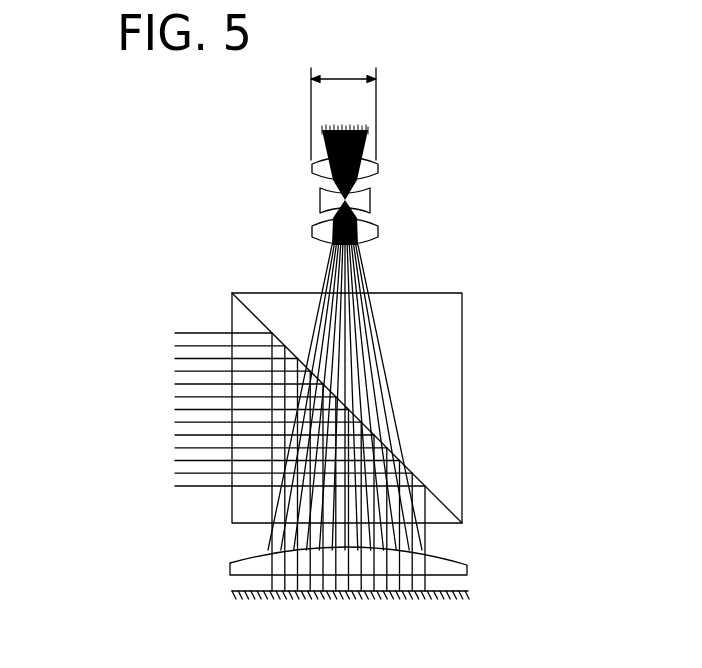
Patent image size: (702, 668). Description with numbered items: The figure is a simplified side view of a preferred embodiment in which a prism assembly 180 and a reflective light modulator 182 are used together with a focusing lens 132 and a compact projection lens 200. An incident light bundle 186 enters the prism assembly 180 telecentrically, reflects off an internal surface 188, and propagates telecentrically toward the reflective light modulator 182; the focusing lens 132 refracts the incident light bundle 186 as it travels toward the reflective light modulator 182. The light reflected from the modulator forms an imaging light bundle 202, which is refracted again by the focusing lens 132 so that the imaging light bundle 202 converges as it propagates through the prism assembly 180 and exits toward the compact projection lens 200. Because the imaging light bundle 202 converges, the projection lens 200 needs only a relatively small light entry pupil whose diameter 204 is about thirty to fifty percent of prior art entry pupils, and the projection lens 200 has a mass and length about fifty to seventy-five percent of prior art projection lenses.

The entry pupil diameter 204 is at (340, 79).
The compact projection lens 200 is at (410, 200).
The imaging light bundle 202 is at (317, 315).
The prism assembly 180 is at (442, 338).
The incident light bundle 186 is at (165, 455).
The internal surface 188 is at (437, 493).
The focusing lens 132 is at (242, 571).
The reflective light modulator 182 is at (450, 588).